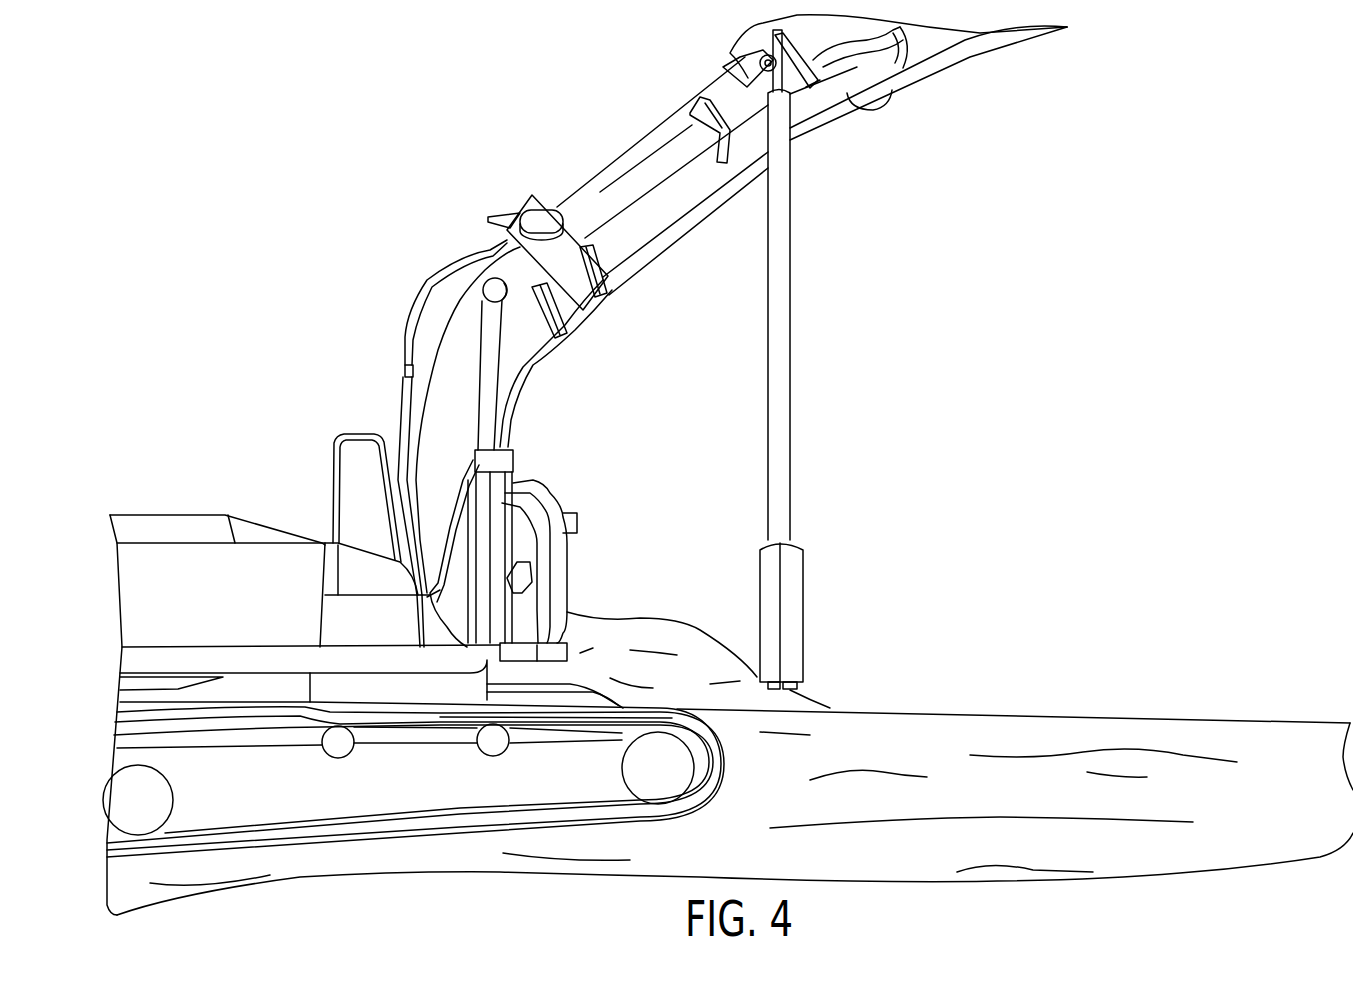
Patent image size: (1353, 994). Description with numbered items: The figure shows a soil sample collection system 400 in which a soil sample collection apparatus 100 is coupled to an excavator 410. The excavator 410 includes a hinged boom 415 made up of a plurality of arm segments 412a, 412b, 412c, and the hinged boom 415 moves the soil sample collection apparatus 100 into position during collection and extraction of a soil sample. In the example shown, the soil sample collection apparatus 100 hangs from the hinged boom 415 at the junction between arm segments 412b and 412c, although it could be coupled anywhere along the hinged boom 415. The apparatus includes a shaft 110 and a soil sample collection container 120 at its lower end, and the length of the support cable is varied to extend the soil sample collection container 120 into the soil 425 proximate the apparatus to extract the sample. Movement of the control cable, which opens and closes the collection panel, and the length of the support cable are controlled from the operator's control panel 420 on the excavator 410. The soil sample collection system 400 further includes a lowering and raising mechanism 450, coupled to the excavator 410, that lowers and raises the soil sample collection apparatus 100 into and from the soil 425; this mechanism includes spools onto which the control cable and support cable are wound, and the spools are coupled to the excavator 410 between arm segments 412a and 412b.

The soil sample collection system 400 is at (360, 170).
The lowering and raising mechanism 450 is at (475, 186).
The hinged boom 415 is at (478, 265).
The arm segment 412a is at (440, 408).
The arm segment 412b is at (620, 163).
The arm segment 412c is at (887, 45).
The soil sample collection apparatus 100 is at (738, 304).
The shaft 110 is at (768, 387).
The soil sample collection container 120 is at (768, 598).
The operator's control panel 420 is at (523, 577).
The excavator 410 is at (280, 573).
The soil 425 is at (1008, 783).